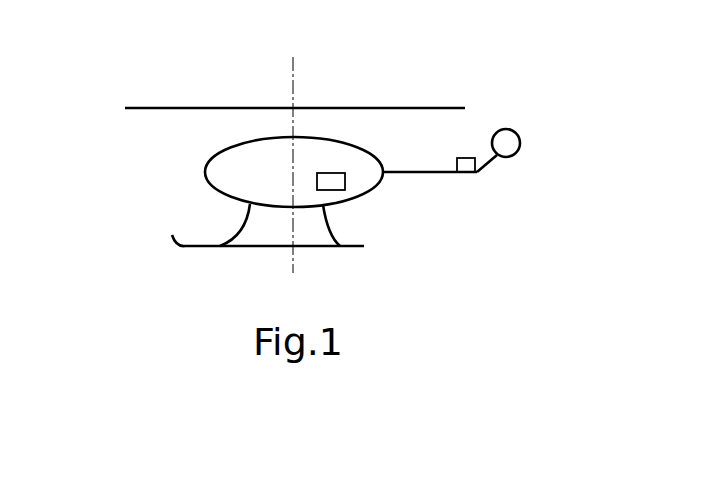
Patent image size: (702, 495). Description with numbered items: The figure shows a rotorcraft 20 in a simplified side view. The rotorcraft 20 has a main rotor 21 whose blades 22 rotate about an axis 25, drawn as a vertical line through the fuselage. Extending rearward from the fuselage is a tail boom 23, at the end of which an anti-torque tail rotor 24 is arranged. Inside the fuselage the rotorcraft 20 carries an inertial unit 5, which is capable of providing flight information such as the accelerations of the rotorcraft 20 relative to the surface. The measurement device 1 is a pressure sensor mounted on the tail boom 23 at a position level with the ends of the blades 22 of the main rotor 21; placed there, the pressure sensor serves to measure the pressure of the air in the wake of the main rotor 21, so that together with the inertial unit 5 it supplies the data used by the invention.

The measurement device 1 is at (467, 172).
The inertial unit 5 is at (345, 181).
The rotorcraft 20 is at (415, 219).
The main rotor 21 is at (127, 135).
The blades 22 is at (170, 108).
The tail boom 23 is at (425, 172).
The anti-torque tail rotor 24 is at (522, 122).
The axis 25 is at (296, 70).